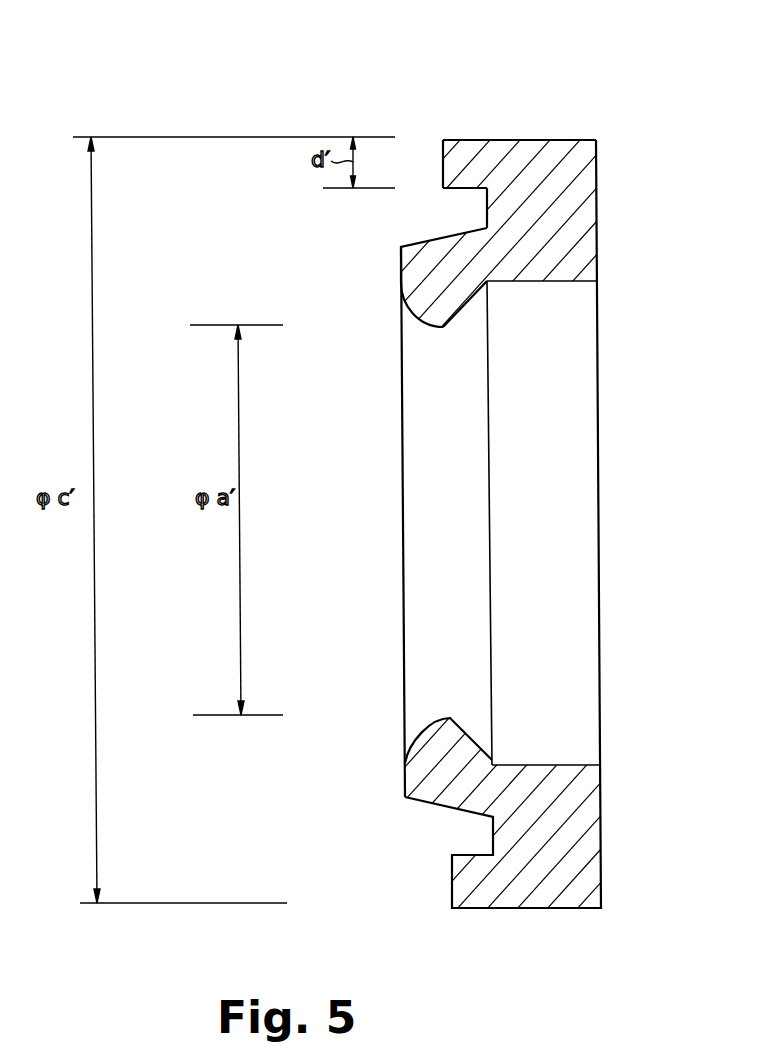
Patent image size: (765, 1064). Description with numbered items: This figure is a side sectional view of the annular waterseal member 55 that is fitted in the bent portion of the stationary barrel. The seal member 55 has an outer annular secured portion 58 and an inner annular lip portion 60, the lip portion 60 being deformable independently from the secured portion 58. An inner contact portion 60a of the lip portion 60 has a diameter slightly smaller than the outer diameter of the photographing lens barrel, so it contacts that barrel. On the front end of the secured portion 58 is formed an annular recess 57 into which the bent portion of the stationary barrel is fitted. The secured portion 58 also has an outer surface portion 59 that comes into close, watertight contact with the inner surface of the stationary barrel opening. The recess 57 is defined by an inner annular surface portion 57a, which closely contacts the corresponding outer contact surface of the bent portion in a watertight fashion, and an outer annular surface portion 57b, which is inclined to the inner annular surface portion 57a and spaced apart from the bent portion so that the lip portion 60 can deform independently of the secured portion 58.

The annular waterseal member 55 is at (382, 463).
The annular recess 57 is at (457, 210).
The inner annular surface portion 57a is at (462, 202).
The outer annular surface portion 57b is at (467, 207).
The annular secured portion 58 is at (553, 190).
The outer surface portion 59 is at (497, 140).
The annular lip portion 60 is at (420, 272).
The inner contact portion 60a is at (443, 328).